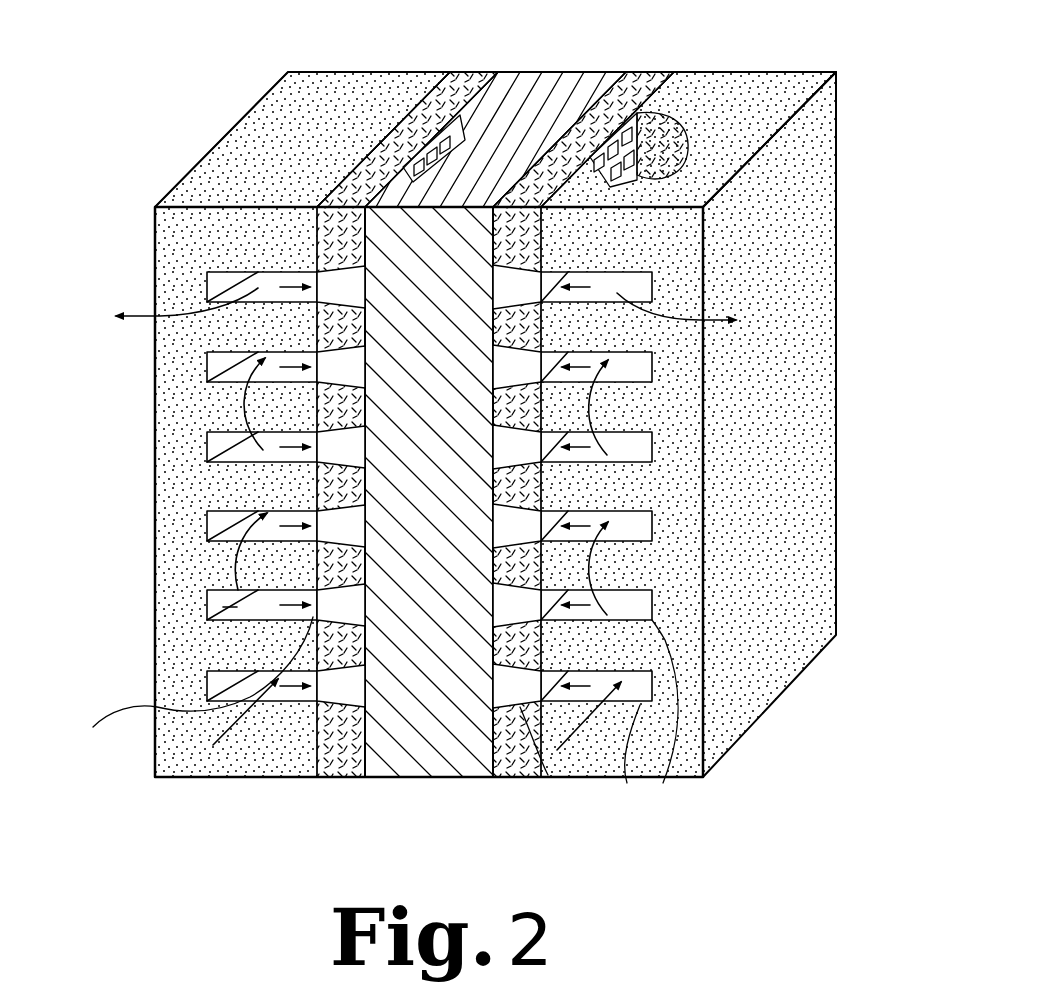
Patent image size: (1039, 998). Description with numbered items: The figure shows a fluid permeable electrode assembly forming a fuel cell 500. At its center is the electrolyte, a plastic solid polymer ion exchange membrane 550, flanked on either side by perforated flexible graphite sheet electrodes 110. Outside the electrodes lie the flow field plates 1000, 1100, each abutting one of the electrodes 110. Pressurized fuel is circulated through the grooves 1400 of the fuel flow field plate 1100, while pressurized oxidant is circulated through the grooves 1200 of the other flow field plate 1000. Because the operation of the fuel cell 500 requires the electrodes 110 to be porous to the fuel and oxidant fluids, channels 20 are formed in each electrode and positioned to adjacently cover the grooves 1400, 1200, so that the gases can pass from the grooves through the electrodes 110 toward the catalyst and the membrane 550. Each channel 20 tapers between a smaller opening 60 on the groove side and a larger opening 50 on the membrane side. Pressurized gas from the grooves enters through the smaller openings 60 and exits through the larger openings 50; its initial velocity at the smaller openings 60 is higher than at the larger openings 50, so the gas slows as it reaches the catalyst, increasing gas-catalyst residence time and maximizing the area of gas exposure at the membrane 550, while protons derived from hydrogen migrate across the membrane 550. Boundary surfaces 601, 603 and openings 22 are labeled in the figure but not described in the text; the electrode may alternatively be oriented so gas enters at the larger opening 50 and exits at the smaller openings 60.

The fuel cell 500 is at (657, 56).
The solid polymer ion exchange membrane 550 is at (568, 72).
The flow field plate 1000 is at (813, 248).
The fuel flow field plate 1100 is at (237, 118).
The grooves 1200 is at (627, 783).
The grooves 1400 is at (207, 700).
The channels 20 is at (482, 118).
The channel openings 22 is at (418, 102).
The larger openings 50 is at (405, 138).
The smaller openings 60 is at (623, 185).
The perforated flexible graphite sheet electrodes 110 is at (330, 783).
The first wall surface 601 is at (360, 783).
The second wall surface 603 is at (488, 783).